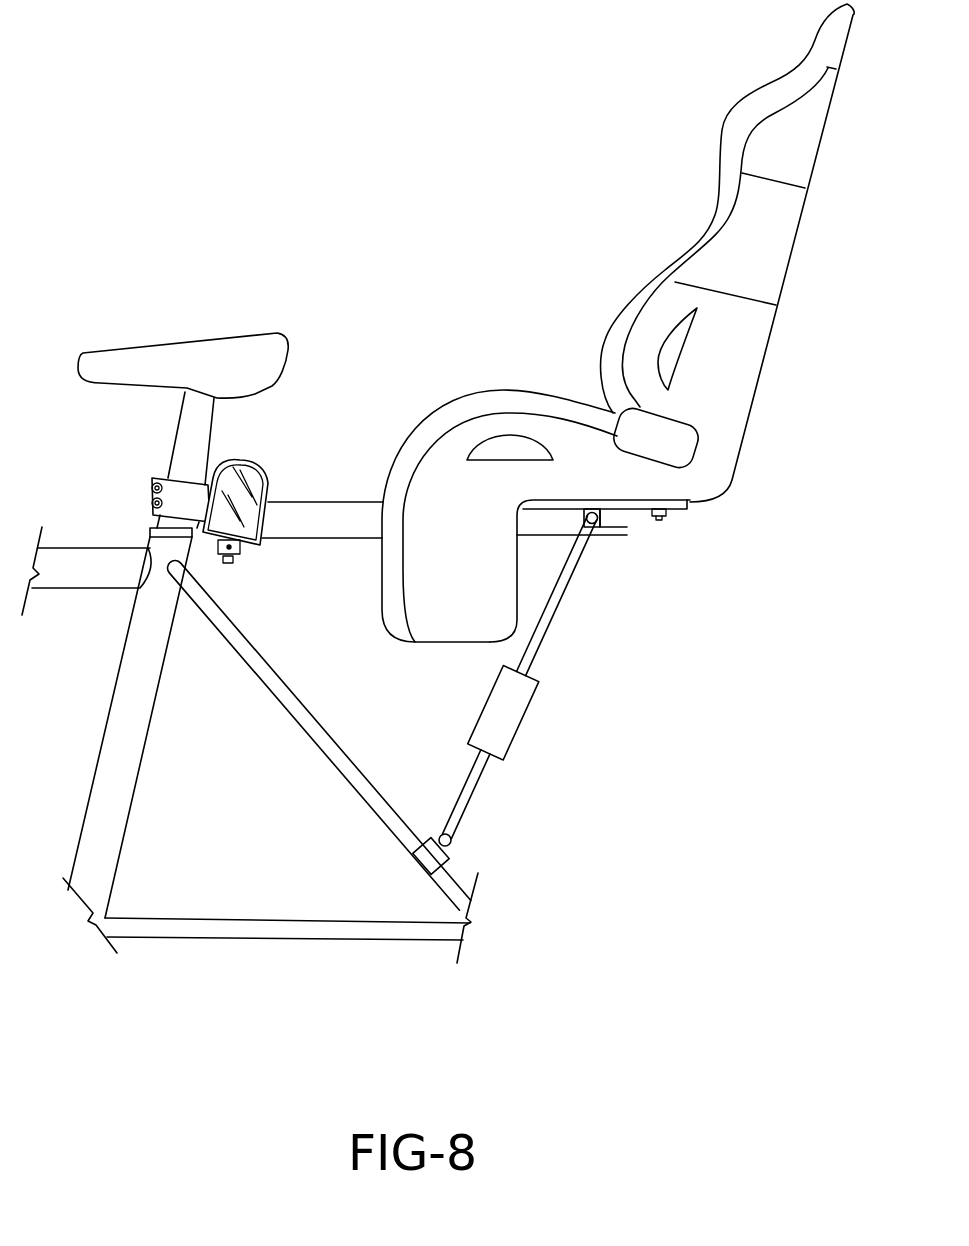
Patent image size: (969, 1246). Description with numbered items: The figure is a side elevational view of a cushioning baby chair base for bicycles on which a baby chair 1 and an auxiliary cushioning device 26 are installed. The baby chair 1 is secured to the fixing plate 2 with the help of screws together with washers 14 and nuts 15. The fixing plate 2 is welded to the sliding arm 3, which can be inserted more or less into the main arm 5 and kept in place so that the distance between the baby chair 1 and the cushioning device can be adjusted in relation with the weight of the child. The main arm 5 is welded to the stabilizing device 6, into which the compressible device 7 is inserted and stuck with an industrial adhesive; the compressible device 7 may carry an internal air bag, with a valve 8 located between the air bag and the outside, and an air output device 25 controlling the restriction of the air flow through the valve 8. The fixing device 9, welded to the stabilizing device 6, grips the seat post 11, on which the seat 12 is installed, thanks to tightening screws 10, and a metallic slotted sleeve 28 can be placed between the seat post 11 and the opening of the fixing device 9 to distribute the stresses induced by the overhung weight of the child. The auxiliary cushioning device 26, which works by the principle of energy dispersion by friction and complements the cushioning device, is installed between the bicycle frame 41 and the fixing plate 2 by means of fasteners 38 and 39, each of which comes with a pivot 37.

The baby chair 1 is at (707, 237).
The fixing plate 2 is at (687, 507).
The sliding arm 3 is at (633, 527).
The main arm 5 is at (303, 535).
The stabilizing device 6 is at (265, 473).
The compressible device 7 is at (265, 490).
The valve 8 is at (238, 552).
The fixing device 9 is at (153, 515).
The tightening screws 10 is at (150, 502).
The seat post 11 is at (178, 457).
The seat 12 is at (228, 350).
The washers 14 is at (660, 512).
The nuts 15 is at (662, 516).
The air output device 25 is at (228, 562).
The auxiliary cushioning device 26 is at (507, 726).
The metallic slotted sleeve 28 is at (150, 527).
The pivot 37 is at (593, 527).
The fastener 38 is at (625, 525).
The fastener 39 is at (417, 862).
The bicycle frame 41 is at (140, 740).